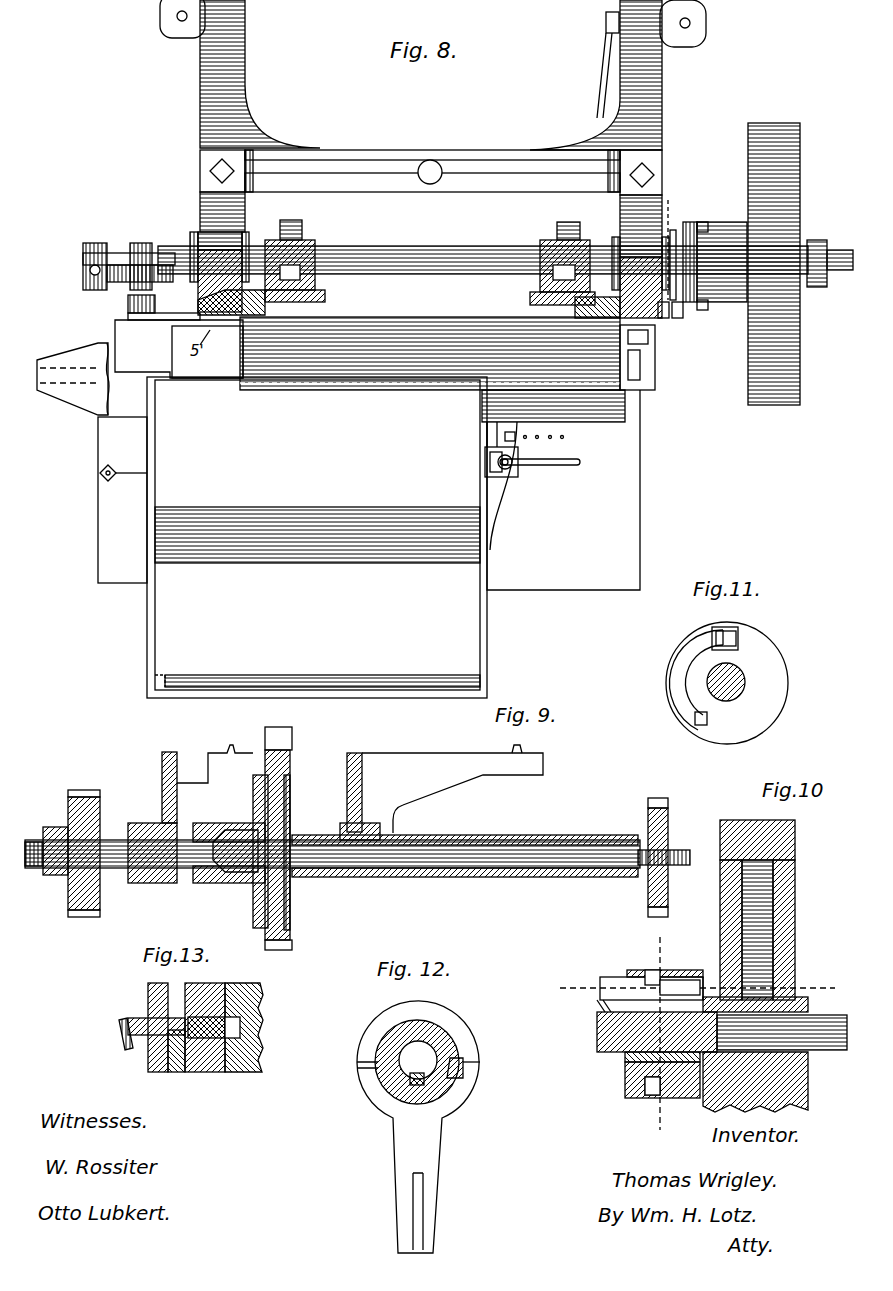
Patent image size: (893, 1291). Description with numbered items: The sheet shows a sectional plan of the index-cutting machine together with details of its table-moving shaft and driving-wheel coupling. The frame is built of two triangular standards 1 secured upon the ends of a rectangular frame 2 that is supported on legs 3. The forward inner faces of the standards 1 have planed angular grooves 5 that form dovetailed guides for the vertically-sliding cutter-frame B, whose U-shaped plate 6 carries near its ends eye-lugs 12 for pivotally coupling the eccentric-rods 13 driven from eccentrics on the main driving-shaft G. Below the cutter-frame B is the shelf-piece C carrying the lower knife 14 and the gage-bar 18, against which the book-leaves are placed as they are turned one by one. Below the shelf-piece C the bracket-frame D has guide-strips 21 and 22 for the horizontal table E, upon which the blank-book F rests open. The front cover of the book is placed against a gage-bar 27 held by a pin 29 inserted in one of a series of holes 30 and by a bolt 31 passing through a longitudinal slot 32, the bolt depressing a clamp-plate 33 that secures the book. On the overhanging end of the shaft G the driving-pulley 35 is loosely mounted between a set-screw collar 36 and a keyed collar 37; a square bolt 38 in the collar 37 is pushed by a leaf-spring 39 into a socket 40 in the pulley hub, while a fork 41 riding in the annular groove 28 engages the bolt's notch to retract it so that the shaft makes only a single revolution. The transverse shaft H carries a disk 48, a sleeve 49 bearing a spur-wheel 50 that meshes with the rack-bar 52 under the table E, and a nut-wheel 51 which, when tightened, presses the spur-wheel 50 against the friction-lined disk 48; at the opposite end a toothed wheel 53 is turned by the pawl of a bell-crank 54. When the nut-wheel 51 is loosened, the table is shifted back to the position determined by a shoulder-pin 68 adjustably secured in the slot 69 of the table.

In FIG. 8, the standards 1 is at (238, 228).
In FIG. 8, the rectangular frame 2 is at (432, 157).
In FIG. 8, the legs 3 is at (232, 100).
In FIG. 8, the angular grooves 5 is at (672, 235).
In FIG. 8, the U-shaped plate 6 is at (290, 312).
In FIG. 8, the eye-lugs 12 is at (320, 252).
In FIG. 8, the eccentric-rods 13 is at (300, 243).
In FIG. 8, the lower knife 14 is at (592, 416).
In FIG. 8, the gage-bar 18 is at (326, 380).
In FIG. 9, the guide-strip 21 is at (217, 757).
In FIG. 9, the guide-strip 22 is at (512, 748).
In FIG. 8, the gage-bar 27 is at (494, 520).
In FIG. 8, the annular groove 28 is at (712, 224).
In FIG. 11, the annular groove 28 is at (727, 683).
In FIG. 10, the annular groove 28 is at (650, 1095).
In FIG. 13, the annular groove 28 is at (177, 995).
In FIG. 12, the annular groove 28 is at (435, 1012).
In FIG. 8, the pin 29 is at (505, 437).
In FIG. 8, the holes 30 is at (552, 446).
In FIG. 8, the bolt 31 is at (518, 476).
In FIG. 8, the longitudinal slot 32 is at (560, 466).
In FIG. 8, the clamp-plate 33 is at (485, 456).
In FIG. 8, the driving-pulley 35 is at (790, 224).
In FIG. 10, the driving-pulley 35 is at (795, 948).
In FIG. 13, the driving-pulley 35 is at (245, 1072).
In FIG. 8, the collar 36 is at (816, 246).
In FIG. 8, the collar 37 is at (708, 304).
In FIG. 11, the collar 37 is at (742, 713).
In FIG. 10, the collar 37 is at (625, 1078).
In FIG. 13, the collar 37 is at (193, 1072).
In FIG. 12, the collar 37 is at (458, 1040).
In FIG. 11, the square bolt 38 is at (738, 636).
In FIG. 10, the square bolt 38 is at (680, 980).
In FIG. 13, the square bolt 38 is at (132, 1018).
In FIG. 12, the square bolt 38 is at (470, 1072).
In FIG. 11, the leaf-spring 39 is at (680, 668).
In FIG. 10, the leaf-spring 39 is at (600, 988).
In FIG. 13, the leaf-spring 39 is at (120, 1032).
In FIG. 10, the socket 40 is at (705, 978).
In FIG. 13, the socket 40 is at (262, 1029).
In FIG. 8, the fork 41 is at (700, 220).
In FIG. 10, the fork 41 is at (652, 970).
In FIG. 13, the fork 41 is at (176, 1072).
In FIG. 12, the fork 41 is at (420, 1155).
In FIG. 9, the disk 48 is at (252, 905).
In FIG. 9, the sleeve 49 is at (500, 834).
In FIG. 9, the spur-wheel 50 is at (292, 936).
In FIG. 9, the nut-wheel 51 is at (648, 896).
In FIG. 9, the rack-bar 52 is at (278, 833).
In FIG. 9, the toothed wheel 53 is at (82, 910).
In FIG. 9, the bell-crank 54 is at (55, 878).
In FIG. 8, the shoulder-pin 68 is at (110, 478).
In FIG. 8, the slot 69 is at (132, 468).
In FIG. 8, the cutter-frame B is at (325, 306).
In FIG. 8, the shelf-piece C is at (455, 325).
In FIG. 9, the bracket-frame D is at (441, 796).
In FIG. 8, the table E is at (563, 490).
In FIG. 8, the blank-book F is at (317, 537).
In FIG. 8, the main driving-shaft G is at (400, 256).
In FIG. 11, the main driving-shaft G is at (745, 680).
In FIG. 10, the main driving-shaft G is at (828, 1052).
In FIG. 12, the main driving-shaft G is at (385, 1075).
In FIG. 9, the transverse shaft H is at (332, 871).